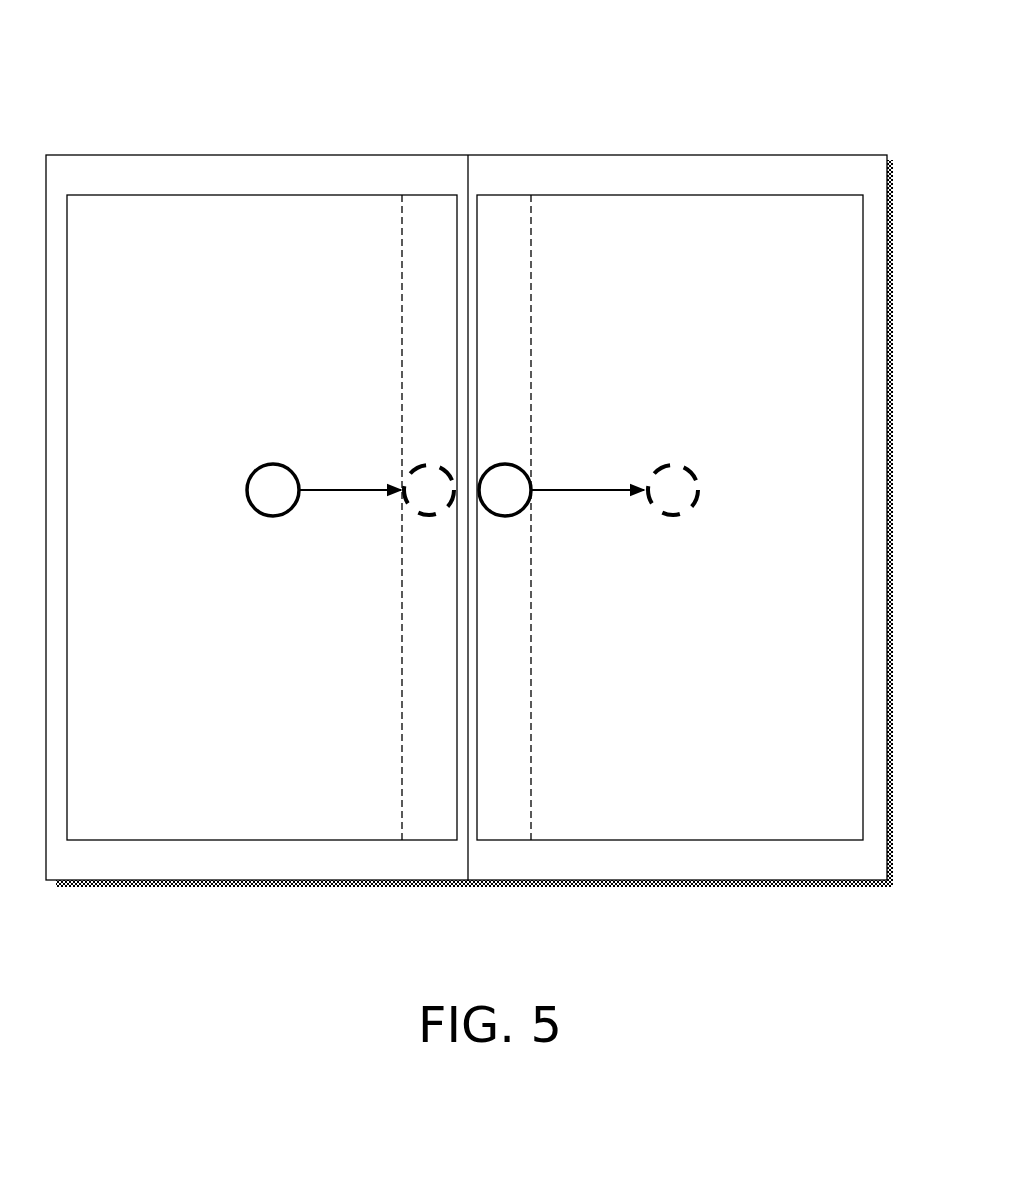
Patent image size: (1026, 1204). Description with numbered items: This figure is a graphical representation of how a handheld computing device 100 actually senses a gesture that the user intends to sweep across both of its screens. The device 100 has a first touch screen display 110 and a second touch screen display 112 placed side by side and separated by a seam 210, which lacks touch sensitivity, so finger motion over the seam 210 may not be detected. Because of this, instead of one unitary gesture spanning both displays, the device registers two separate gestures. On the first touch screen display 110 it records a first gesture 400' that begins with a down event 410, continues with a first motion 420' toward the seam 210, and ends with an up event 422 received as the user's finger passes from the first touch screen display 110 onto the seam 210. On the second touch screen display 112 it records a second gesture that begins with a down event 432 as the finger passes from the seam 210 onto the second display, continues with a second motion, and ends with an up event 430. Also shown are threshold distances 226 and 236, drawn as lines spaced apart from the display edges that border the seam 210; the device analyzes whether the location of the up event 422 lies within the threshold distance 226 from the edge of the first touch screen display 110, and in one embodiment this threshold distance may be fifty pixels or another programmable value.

The device 100 is at (777, 128).
The first touch screen display 110 is at (290, 232).
The second touch screen display 112 is at (685, 230).
The seam 210 is at (468, 185).
The threshold distance 226 is at (398, 315).
The threshold distance 236 is at (531, 314).
The first gesture 400' is at (350, 465).
The down event 410 is at (272, 497).
The first motion 420' is at (350, 456).
The up event 422 is at (423, 500).
The up event 430 is at (697, 490).
The down event 432 is at (512, 500).